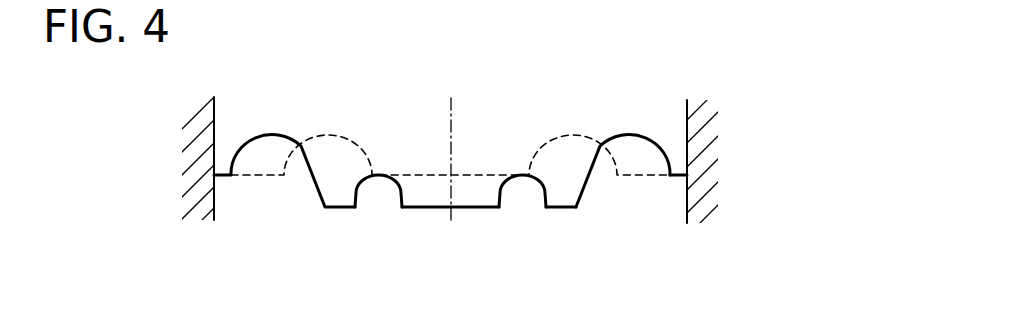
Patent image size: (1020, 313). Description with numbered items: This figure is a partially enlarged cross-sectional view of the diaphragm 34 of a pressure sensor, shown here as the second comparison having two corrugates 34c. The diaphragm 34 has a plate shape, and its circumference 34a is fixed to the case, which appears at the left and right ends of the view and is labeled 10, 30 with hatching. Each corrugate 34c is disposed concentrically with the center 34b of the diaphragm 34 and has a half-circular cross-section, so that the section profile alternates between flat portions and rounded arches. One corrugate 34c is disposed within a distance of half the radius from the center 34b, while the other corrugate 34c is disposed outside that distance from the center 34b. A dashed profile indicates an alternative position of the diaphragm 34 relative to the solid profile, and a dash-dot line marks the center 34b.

The housing 10 is at (716, 143).
The wall member 30 is at (755, 161).
The diaphragm 34 is at (480, 173).
The circumference 34a is at (687, 185).
The center 34b is at (452, 208).
The corrugate 34c is at (632, 137).